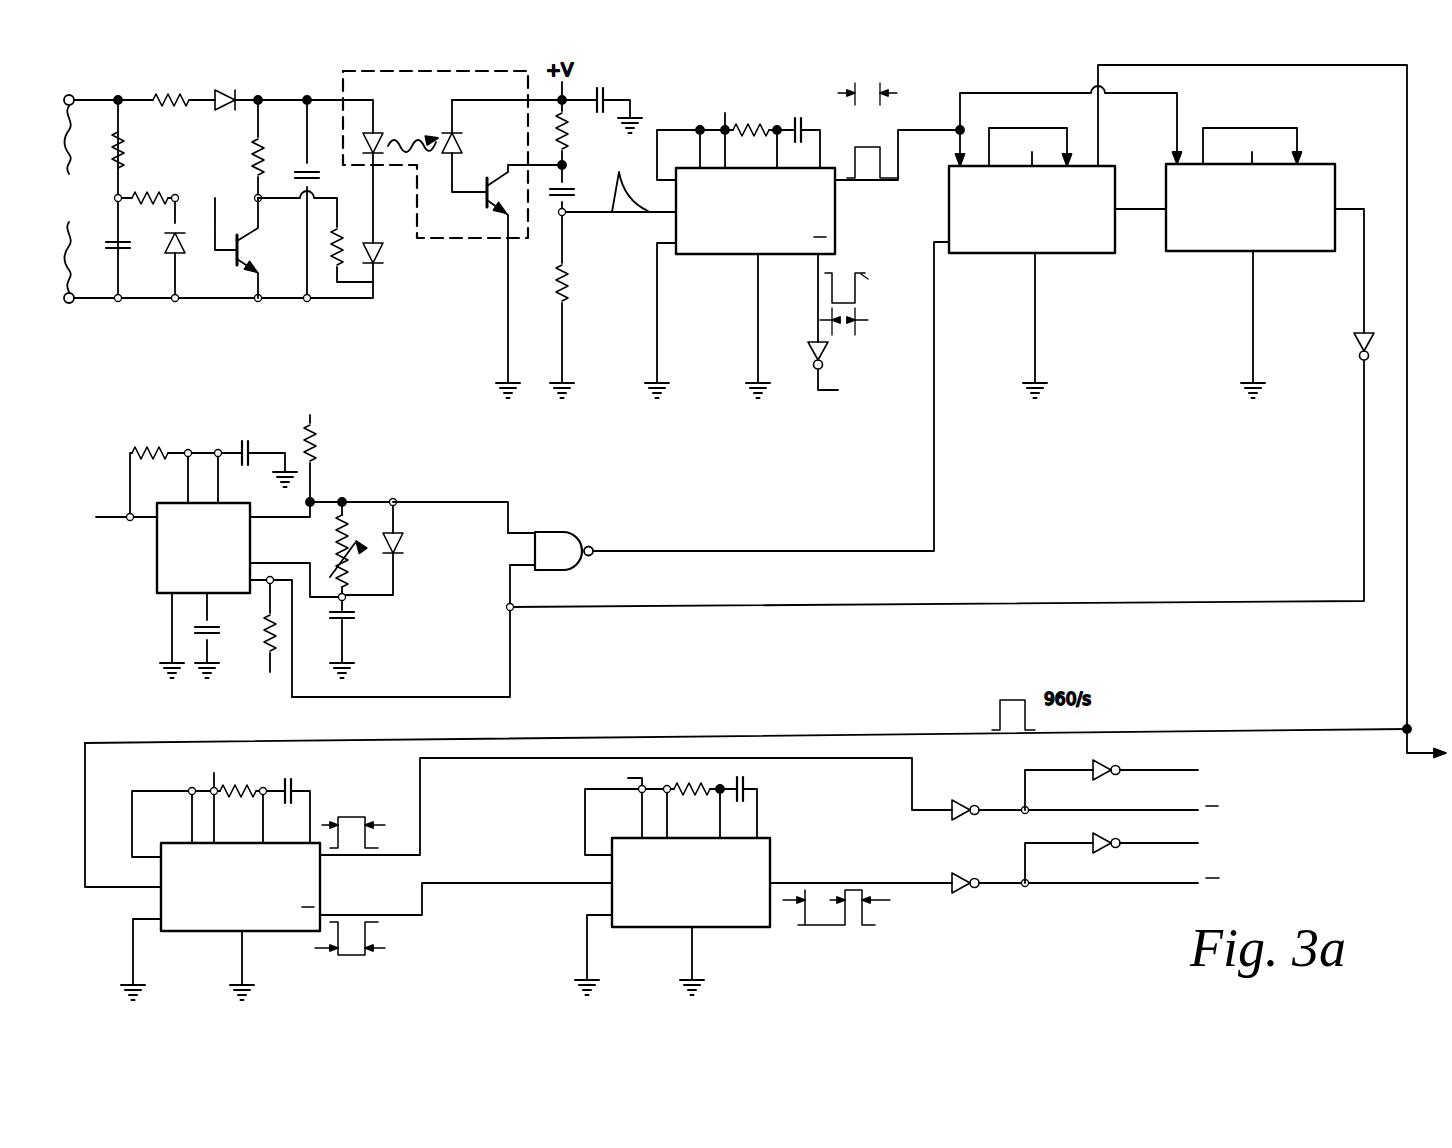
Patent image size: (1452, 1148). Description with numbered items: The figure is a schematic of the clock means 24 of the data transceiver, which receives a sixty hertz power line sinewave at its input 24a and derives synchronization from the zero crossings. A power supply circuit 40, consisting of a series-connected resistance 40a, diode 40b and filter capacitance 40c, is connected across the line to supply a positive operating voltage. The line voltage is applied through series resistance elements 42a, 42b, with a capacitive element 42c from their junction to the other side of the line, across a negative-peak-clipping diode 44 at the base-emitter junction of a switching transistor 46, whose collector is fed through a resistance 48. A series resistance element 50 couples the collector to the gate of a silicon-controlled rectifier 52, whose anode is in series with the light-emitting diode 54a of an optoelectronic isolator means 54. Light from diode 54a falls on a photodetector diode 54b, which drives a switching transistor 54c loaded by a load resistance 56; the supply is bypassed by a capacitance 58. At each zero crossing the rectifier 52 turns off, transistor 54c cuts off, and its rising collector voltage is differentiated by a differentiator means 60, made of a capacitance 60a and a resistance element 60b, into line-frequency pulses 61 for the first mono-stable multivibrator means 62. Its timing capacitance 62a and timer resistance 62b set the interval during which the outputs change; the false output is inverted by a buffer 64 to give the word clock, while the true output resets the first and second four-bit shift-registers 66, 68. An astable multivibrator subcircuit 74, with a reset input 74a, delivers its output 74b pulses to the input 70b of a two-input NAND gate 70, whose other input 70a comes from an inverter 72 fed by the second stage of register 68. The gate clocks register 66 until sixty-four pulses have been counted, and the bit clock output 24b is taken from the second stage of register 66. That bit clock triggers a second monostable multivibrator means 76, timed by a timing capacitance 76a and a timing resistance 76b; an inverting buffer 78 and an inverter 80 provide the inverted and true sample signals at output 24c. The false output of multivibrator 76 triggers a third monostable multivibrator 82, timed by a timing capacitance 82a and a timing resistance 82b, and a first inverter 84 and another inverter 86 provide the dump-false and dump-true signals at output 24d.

The clock means 24 is at (1346, 846).
The input 24a is at (78, 199).
The first clock means output 24b is at (1422, 754).
The clock means output 24c is at (1184, 769).
The clock means output 24d is at (1187, 843).
The power supply circuit 40 is at (227, 76).
The resistance 40a is at (167, 90).
The diode 40b is at (229, 90).
The filter capacitance 40c is at (297, 166).
The series resistance element 42a is at (123, 150).
The series resistance element 42b is at (148, 194).
The capacitive element 42c is at (115, 255).
The negative-peak-clipping diode 44 is at (168, 258).
The switching transistor 46 is at (240, 260).
The resistance 48 is at (247, 160).
The series resistance element 50 is at (342, 234).
The silicon-controlled rectifier 52 is at (386, 263).
The optoelectronic isolator means 54 is at (343, 71).
The light-emitting diode 54a is at (377, 134).
The photodetector diode 54b is at (458, 149).
The switching transistor 54c is at (480, 213).
The load resistance 56 is at (566, 136).
The capacitance 58 is at (604, 90).
The differentiator means 60 is at (556, 243).
The capacitance 60a is at (568, 185).
The resistance element 60b is at (569, 284).
The line-frequency pulses 61 is at (614, 179).
The first mono-stable multivibrator means 62 is at (766, 226).
The timing capacitance 62a is at (800, 118).
The timer resistance 62b is at (752, 120).
The buffer 64 is at (808, 354).
The first four-bit shift-register 66 is at (1045, 223).
The second four-bit shift-register 68 is at (1264, 223).
The two-input NAND gate 70 is at (456, 588).
The input of NAND gate 70a is at (525, 570).
The remaining input of NAND gate 70b is at (528, 530).
The inverter 72 is at (1354, 346).
The astable multivibrator subcircuit 74 is at (340, 477).
The multivibrator reset input 74a is at (292, 663).
The astable multivibrator output 74b is at (428, 502).
The second monostable multivibrator means 76 is at (255, 900).
The timing capacitance 76a is at (293, 784).
The timing resistance 76b is at (248, 790).
The inverting buffer 78 is at (962, 799).
The inverter 80 is at (1094, 781).
The third monostable multivibrator 82 is at (705, 898).
The timing capacitance 82a is at (751, 785).
The timing resistance 82b is at (690, 790).
The first inverter 84 is at (969, 895).
The inverter 86 is at (1096, 854).